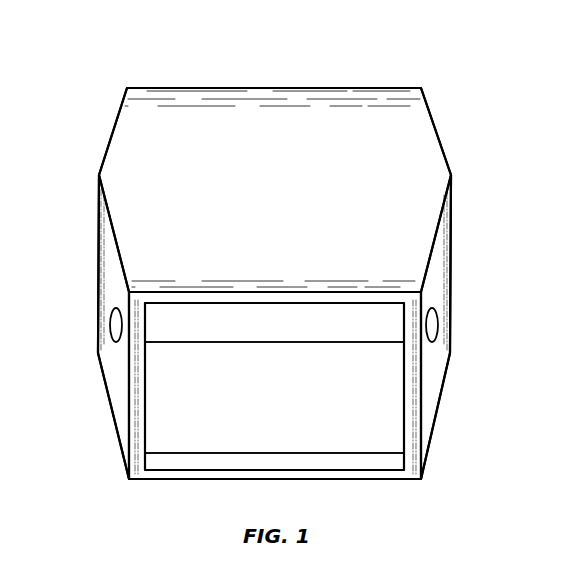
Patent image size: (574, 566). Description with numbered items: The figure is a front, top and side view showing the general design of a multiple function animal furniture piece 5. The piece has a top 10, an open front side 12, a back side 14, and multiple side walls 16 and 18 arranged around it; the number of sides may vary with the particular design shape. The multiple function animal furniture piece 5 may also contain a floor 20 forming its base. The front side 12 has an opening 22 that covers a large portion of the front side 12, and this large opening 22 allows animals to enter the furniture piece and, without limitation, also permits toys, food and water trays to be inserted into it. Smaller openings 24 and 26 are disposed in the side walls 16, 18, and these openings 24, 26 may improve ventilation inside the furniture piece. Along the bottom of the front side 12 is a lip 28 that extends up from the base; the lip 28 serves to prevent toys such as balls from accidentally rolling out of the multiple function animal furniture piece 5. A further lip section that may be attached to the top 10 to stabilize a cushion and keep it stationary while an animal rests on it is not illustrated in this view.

The multiple function animal furniture piece 5 is at (132, 49).
The top 10 is at (283, 201).
The open front side 12 is at (409, 460).
The back side 14 is at (283, 330).
The side wall 16 is at (441, 257).
The side wall 18 is at (103, 241).
The floor 20 is at (283, 410).
The opening 22 is at (162, 427).
The opening 24 is at (115, 325).
The opening 26 is at (432, 325).
The lip 28 is at (152, 463).